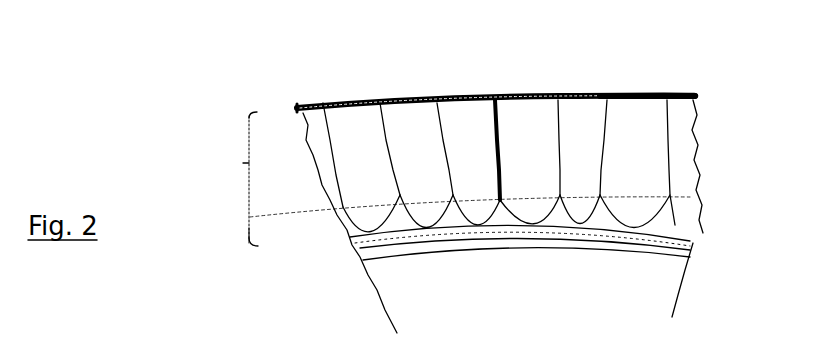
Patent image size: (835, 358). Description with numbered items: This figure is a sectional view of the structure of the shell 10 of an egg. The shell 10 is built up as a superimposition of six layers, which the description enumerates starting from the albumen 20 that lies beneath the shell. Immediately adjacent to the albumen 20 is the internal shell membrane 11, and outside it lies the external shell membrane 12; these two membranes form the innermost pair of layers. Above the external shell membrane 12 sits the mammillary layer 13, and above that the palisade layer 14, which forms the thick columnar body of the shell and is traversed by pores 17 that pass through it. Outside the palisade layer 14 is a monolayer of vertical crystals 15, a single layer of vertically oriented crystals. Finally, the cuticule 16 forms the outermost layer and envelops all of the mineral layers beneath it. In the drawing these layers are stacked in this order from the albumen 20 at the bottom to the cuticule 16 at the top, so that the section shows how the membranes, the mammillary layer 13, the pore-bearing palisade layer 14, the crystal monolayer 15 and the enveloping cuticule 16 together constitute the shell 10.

The shell 10 is at (410, 82).
The internal shell membrane 11 is at (690, 257).
The external shell membrane 12 is at (690, 246).
The mammillary layer 13 is at (248, 228).
The palisade layer 14 is at (248, 163).
The monolayer of vertical crystals 15 is at (297, 108).
The cuticule 16 is at (647, 93).
The pores 17 is at (493, 93).
The albumen 20 is at (390, 288).